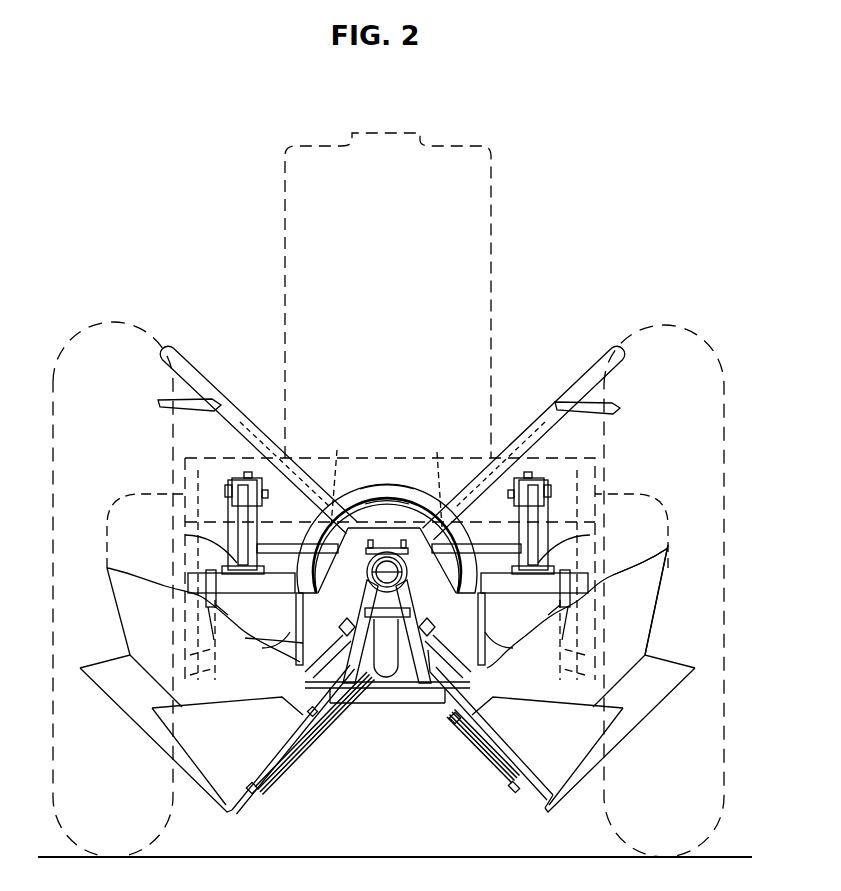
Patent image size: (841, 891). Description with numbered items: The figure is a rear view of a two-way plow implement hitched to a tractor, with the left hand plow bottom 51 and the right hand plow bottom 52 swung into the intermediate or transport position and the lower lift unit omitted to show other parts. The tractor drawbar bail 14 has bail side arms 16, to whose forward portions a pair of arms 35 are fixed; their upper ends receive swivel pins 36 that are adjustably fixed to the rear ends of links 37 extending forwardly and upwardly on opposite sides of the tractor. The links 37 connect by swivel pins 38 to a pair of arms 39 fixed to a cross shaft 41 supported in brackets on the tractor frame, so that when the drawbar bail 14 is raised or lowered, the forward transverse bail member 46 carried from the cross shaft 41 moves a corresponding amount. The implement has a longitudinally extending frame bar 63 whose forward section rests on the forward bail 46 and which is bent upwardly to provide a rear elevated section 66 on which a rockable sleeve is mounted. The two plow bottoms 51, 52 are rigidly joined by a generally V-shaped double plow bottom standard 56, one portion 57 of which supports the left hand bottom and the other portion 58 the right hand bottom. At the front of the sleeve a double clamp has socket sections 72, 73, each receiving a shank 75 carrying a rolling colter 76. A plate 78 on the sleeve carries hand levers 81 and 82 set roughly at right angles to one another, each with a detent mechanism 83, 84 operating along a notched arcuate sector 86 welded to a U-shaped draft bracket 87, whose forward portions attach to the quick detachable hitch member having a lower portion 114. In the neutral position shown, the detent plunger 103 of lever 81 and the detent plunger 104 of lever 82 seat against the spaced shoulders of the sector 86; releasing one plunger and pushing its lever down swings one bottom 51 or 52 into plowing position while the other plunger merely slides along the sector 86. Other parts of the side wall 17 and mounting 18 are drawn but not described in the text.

The tractor drawbar bail 14 is at (581, 569).
The bail side arms 16 is at (212, 602).
The wall edge 17 is at (258, 632).
The mounting bracket 18 is at (203, 685).
The arms 35 is at (270, 600).
The swivel pins 36 is at (185, 535).
The links 37 is at (238, 530).
The swivel pins 38 is at (245, 478).
The arms 39 is at (257, 512).
The cross shaft 41 is at (447, 546).
The transverse bail member 46 is at (288, 632).
The left hand plow bottom 51 is at (143, 703).
The right hand plow bottom 52 is at (630, 703).
The double plow bottom standard 56 is at (367, 698).
The portion of double standard 57 is at (347, 694).
The portion of double standard 58 is at (444, 706).
The frame bar 63 is at (400, 698).
The rear elevated section 66 is at (387, 552).
The socket section 72 is at (348, 607).
The socket section 73 is at (427, 607).
The shank 75 is at (322, 663).
The rolling colter 76 is at (273, 780).
The plate 78 is at (365, 528).
The hand lever 81 is at (552, 425).
The hand lever 82 is at (238, 420).
The detent mechanism 83 is at (465, 492).
The detent mechanism 84 is at (312, 490).
The arcuate sector 86 is at (400, 484).
The draft bracket 87 is at (410, 501).
The detent plunger 103 is at (432, 478).
The detent plunger 104 is at (335, 477).
The lower portion of hitch member 114 is at (306, 645).